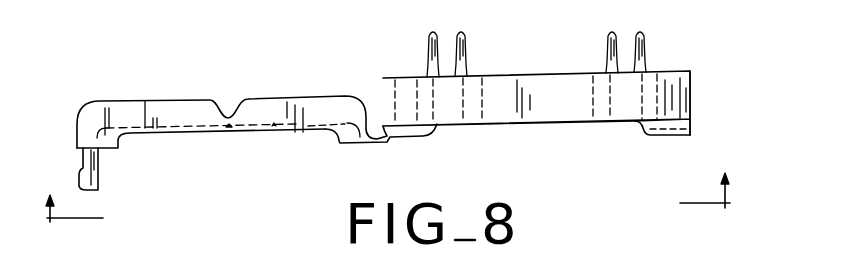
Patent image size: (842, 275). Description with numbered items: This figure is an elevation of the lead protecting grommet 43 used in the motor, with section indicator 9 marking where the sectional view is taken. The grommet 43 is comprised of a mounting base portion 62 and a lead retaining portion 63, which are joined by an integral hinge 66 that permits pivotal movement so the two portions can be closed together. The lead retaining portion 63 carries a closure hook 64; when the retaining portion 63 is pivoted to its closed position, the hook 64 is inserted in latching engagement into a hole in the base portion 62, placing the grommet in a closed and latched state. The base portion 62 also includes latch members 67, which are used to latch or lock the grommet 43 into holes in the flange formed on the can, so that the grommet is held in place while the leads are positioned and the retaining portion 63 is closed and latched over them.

The lead grommet 43 is at (370, 91).
The mounting base portion 62 is at (690, 85).
The lead retaining portion 63 is at (131, 101).
The closure hook 64 is at (98, 172).
The integral hinge 66 is at (395, 144).
The latch members 67 is at (429, 42).
The section line 9- 9 is at (387, 184).